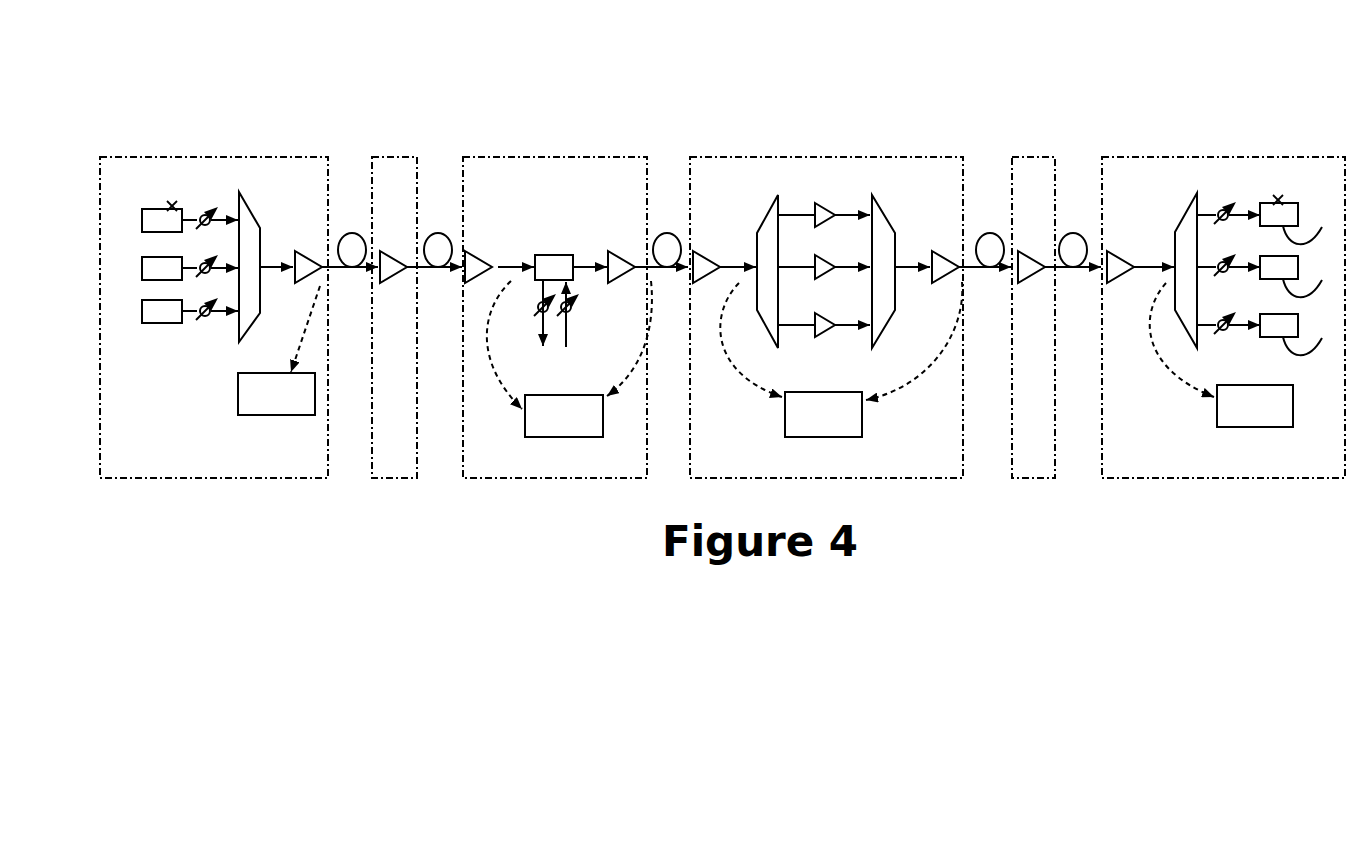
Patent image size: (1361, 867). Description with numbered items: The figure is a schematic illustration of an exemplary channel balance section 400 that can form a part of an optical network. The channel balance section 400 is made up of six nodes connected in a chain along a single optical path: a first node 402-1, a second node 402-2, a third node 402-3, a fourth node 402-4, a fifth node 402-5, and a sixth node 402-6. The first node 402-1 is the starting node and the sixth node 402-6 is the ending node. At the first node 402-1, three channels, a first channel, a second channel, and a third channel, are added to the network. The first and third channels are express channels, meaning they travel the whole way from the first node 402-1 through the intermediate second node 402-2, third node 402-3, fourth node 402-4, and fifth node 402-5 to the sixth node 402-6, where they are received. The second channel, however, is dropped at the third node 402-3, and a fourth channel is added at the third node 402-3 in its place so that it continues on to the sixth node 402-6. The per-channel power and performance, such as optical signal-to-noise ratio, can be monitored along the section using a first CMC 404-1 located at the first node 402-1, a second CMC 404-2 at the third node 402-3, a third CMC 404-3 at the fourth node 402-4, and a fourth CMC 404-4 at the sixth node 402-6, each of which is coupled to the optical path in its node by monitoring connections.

The channel balance section 400 is at (342, 80).
The first node 402-1 is at (138, 157).
The second node 402-2 is at (372, 190).
The third node 402-3 is at (473, 157).
The fourth node 402-4 is at (765, 157).
The fifth node 402-5 is at (1012, 200).
The sixth node 402-6 is at (1182, 125).
The first CMC 404-1 is at (241, 416).
The second CMC 404-2 is at (527, 438).
The third CMC 404-3 is at (789, 438).
The fourth CMC 404-4 is at (1292, 427).